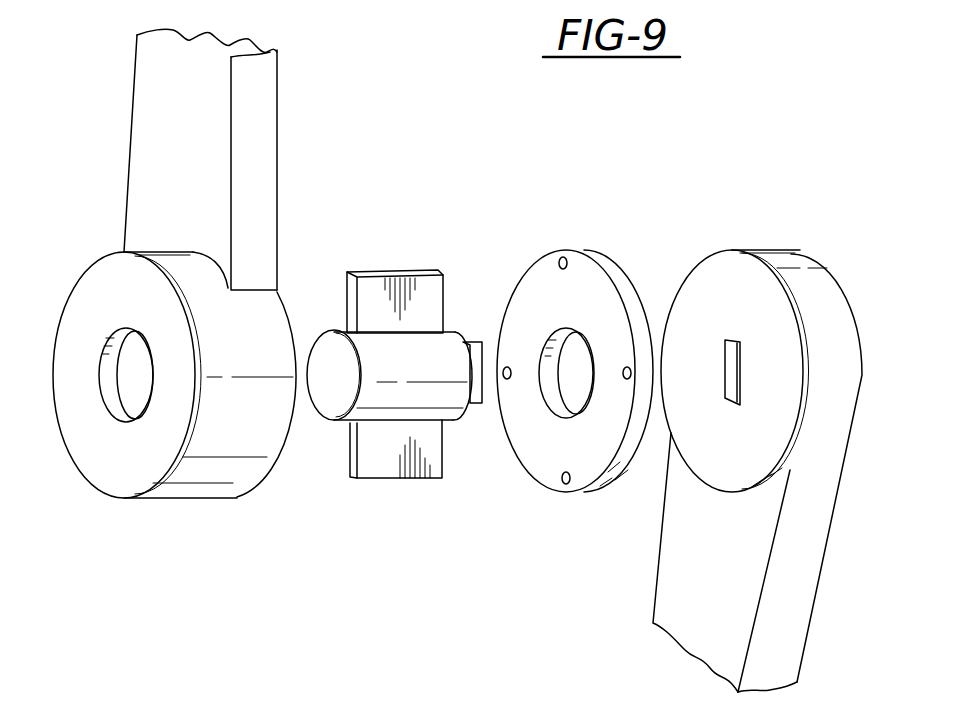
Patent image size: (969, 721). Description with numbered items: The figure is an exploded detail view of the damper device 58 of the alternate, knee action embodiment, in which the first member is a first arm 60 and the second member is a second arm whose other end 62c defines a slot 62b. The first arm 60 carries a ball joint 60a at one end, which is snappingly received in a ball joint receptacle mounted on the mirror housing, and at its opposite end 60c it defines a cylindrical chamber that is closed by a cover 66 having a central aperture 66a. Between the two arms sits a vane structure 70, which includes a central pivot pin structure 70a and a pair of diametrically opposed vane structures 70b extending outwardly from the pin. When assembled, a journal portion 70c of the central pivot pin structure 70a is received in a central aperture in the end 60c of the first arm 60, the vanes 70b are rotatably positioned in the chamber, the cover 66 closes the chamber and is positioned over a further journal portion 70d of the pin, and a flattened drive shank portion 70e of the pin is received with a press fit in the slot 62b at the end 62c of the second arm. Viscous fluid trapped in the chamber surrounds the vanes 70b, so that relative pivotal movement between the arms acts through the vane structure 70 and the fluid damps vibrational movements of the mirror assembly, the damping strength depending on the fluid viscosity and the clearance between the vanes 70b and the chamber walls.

The damper device 58 is at (545, 500).
The first arm 60 is at (145, 108).
The ball joint 60a is at (108, 378).
The end of arm 60c is at (73, 460).
The slot 62b is at (740, 343).
The other end of the arm 62c is at (840, 337).
The cover 66 is at (617, 272).
The central aperture 66a is at (567, 393).
The vane structure 70 is at (365, 221).
The central pivot pin structure 70a is at (382, 480).
The vane structures 70b is at (425, 268).
The journal portion 70c is at (340, 330).
The further journal portion 70d is at (450, 333).
The flattened drive shank portion 70e is at (473, 403).